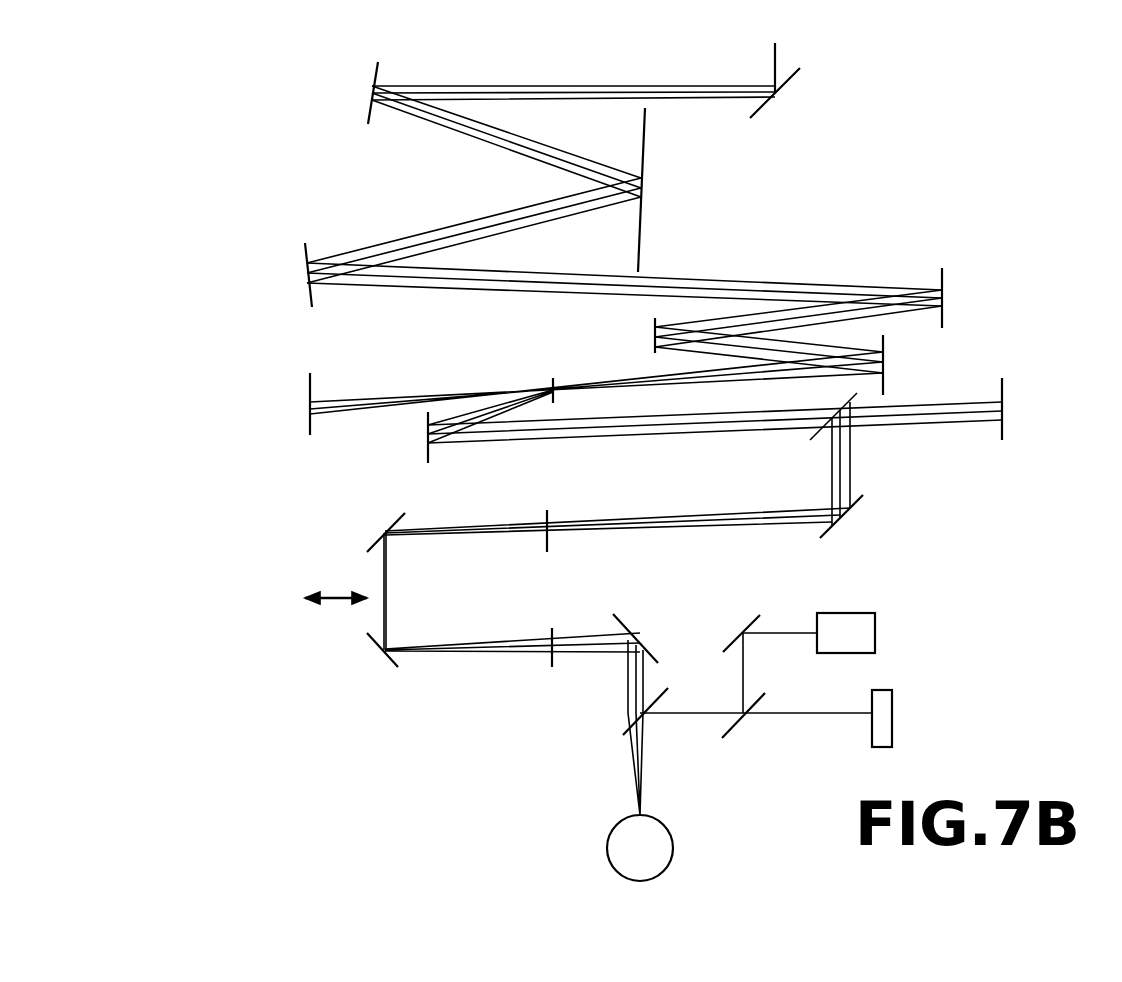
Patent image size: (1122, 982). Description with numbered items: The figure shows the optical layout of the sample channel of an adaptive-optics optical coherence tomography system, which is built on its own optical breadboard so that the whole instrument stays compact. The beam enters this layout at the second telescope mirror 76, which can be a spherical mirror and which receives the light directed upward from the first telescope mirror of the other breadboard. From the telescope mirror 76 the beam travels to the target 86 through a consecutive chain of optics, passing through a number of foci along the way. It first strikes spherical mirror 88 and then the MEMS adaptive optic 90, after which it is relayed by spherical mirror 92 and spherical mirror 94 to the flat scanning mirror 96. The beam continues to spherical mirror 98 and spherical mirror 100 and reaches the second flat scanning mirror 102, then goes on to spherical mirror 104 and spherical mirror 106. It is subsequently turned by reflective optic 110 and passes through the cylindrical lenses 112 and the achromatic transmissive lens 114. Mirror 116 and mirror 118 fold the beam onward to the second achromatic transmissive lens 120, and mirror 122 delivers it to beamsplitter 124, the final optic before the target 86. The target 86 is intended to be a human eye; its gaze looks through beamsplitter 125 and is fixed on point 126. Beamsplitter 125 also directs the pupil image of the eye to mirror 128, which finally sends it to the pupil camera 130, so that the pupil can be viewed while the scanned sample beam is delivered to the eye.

The second telescope mirror 76 is at (785, 90).
The target 86 is at (673, 843).
The spherical mirror 88 is at (372, 100).
The MEMS adaptive optic 90 is at (645, 145).
The spherical mirror 92 is at (306, 290).
The spherical mirror 94 is at (948, 302).
The scanning mirror 96 is at (653, 338).
The spherical mirror 98 is at (888, 368).
The spherical mirror 100 is at (305, 410).
The scanning mirror 102 is at (550, 383).
The spherical mirror 104 is at (425, 440).
The spherical mirror 106 is at (1008, 413).
The reflective optic 110 is at (855, 512).
The cylindrical lenses 112 is at (787, 552).
The achromatic transmissive lens 114 is at (548, 518).
The mirror 116 is at (383, 531).
The mirror 118 is at (386, 654).
The achromatic transmissive lens 120 is at (551, 660).
The mirror 122 is at (650, 607).
The beamsplitter 124 is at (640, 720).
The beamsplitter 125 is at (758, 722).
The point 126 is at (893, 718).
The mirror 128 is at (741, 633).
The pupil camera 130 is at (875, 635).